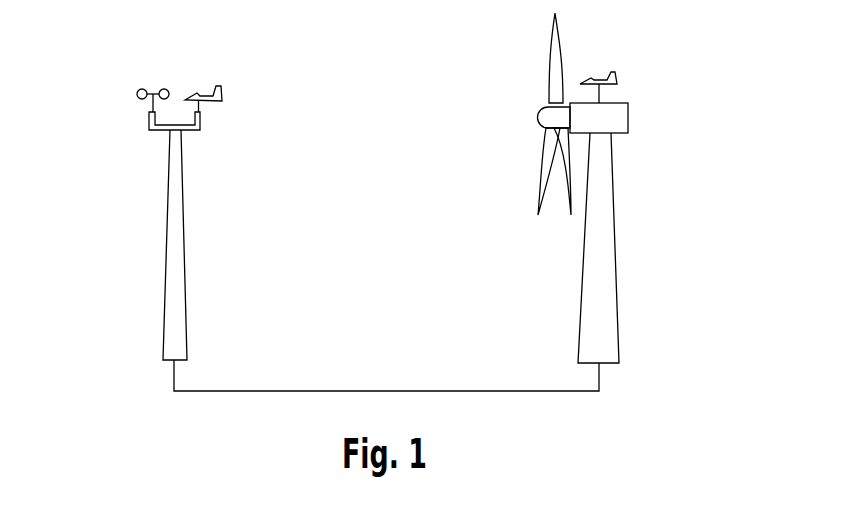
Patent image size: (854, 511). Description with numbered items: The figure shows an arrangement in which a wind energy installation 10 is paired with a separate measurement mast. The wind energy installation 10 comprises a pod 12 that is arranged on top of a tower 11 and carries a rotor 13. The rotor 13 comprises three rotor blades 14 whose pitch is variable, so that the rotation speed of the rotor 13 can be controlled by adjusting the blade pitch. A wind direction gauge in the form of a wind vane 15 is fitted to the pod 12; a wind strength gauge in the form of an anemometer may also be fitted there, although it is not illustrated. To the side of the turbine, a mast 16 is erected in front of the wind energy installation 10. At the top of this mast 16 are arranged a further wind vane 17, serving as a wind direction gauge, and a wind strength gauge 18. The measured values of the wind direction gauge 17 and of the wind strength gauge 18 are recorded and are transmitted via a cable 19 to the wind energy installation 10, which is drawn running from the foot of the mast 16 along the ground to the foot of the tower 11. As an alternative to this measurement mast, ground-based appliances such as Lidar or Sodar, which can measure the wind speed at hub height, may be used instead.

The wind energy installation 10 is at (605, 185).
The tower 11 is at (600, 237).
The pod 12 is at (613, 120).
The rotor 13 is at (538, 122).
The rotor blade 14 is at (556, 45).
The wind vane 15 is at (617, 77).
The mast 16 is at (173, 238).
The further wind vane 17 is at (221, 92).
The wind strength gauge 18 is at (137, 92).
The cable 19 is at (385, 391).